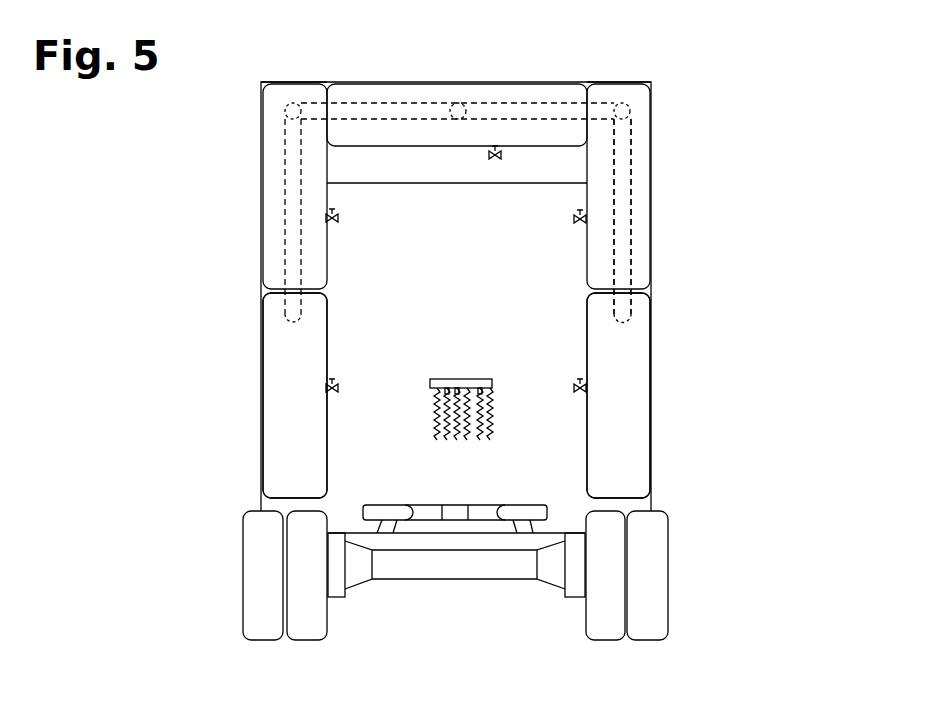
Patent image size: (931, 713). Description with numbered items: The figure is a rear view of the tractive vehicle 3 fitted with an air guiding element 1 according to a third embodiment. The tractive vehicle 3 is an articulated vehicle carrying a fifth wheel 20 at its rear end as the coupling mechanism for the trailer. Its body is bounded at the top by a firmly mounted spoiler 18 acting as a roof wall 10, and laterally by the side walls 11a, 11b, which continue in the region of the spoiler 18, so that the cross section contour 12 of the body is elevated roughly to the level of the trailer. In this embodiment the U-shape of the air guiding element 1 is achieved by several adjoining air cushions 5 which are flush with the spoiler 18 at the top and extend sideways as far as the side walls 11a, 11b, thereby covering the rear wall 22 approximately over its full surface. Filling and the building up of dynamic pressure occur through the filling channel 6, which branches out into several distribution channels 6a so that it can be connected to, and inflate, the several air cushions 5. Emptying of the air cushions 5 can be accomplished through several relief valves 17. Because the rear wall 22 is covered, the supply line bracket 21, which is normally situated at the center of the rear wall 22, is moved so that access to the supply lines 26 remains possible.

The air guiding element 1 is at (245, 182).
The tractive vehicle 3 is at (172, 330).
The air cushion 5 is at (272, 250).
The filling channel 6 is at (458, 120).
The distribution channel 6a is at (622, 238).
The roof wall 10 is at (402, 82).
The spoiler 18 is at (457, 104).
The side wall 11a is at (262, 455).
The side wall 11b is at (651, 367).
The cross section contour 12 is at (313, 82).
The relief valve 17 is at (580, 219).
The fifth wheel 20 is at (547, 514).
The supply line bracket 21 is at (455, 378).
The rear wall 22 is at (399, 330).
The supply lines 26 is at (438, 437).